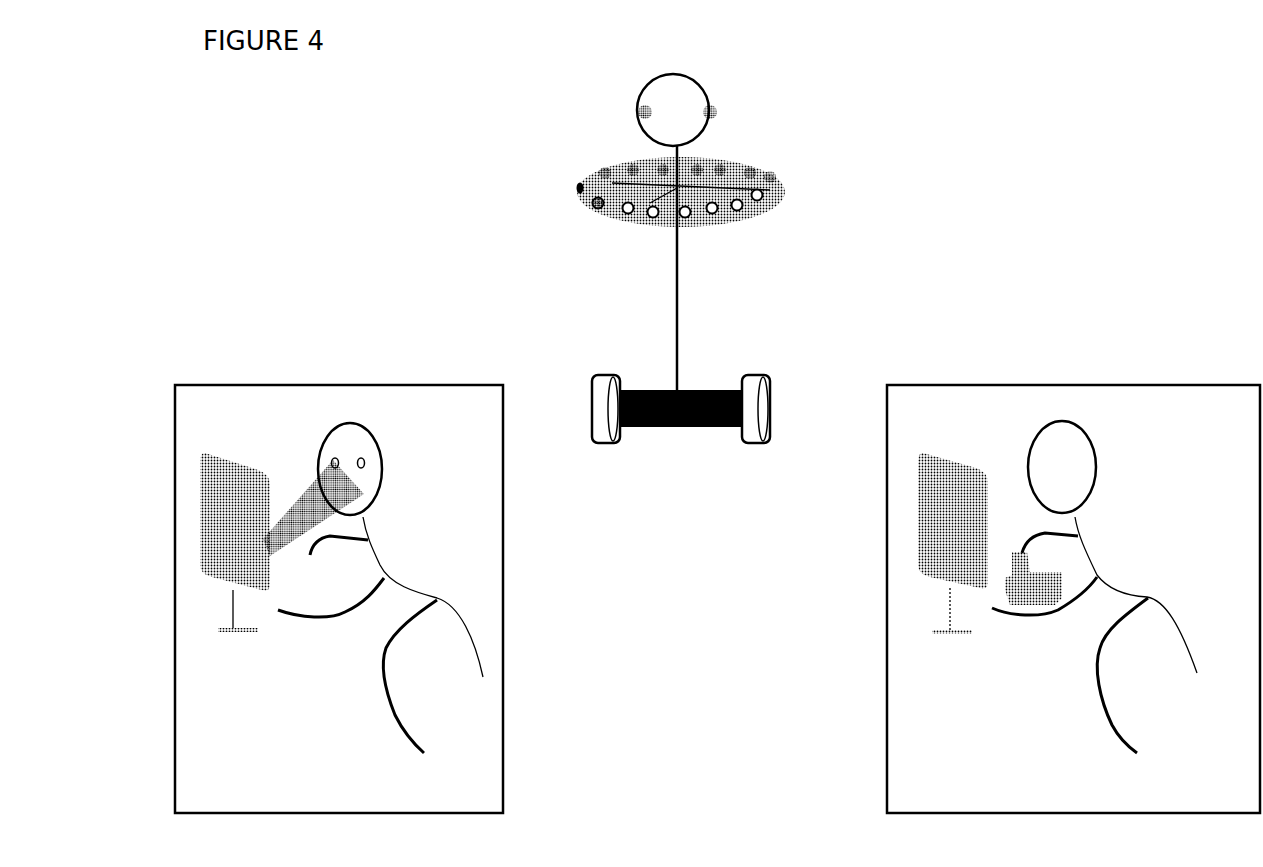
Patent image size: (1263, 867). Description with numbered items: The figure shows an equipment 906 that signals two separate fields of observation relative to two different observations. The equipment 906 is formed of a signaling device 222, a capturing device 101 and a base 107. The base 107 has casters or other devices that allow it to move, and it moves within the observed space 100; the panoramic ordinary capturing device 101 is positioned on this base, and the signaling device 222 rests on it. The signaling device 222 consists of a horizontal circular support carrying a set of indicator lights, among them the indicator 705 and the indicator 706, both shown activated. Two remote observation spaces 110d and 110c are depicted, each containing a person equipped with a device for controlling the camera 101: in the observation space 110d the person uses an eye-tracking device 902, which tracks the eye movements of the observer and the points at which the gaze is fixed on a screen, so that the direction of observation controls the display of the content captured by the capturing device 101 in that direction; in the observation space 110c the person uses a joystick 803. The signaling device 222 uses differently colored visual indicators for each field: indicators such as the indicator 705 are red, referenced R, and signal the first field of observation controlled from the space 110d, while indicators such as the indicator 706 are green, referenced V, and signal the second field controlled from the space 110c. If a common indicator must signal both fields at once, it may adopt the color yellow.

The observed space 100 is at (624, 245).
The capturing device 101 is at (707, 97).
The equipment 906 is at (621, 140).
The indicator 706 is at (763, 180).
The indicator 705 is at (598, 217).
The signaling device 222 is at (747, 210).
The base 107 is at (685, 303).
The observation space 110d is at (339, 599).
The observation space 110c is at (1073, 599).
The eye-tracking device 902 is at (307, 490).
The joystick 803 is at (1033, 602).